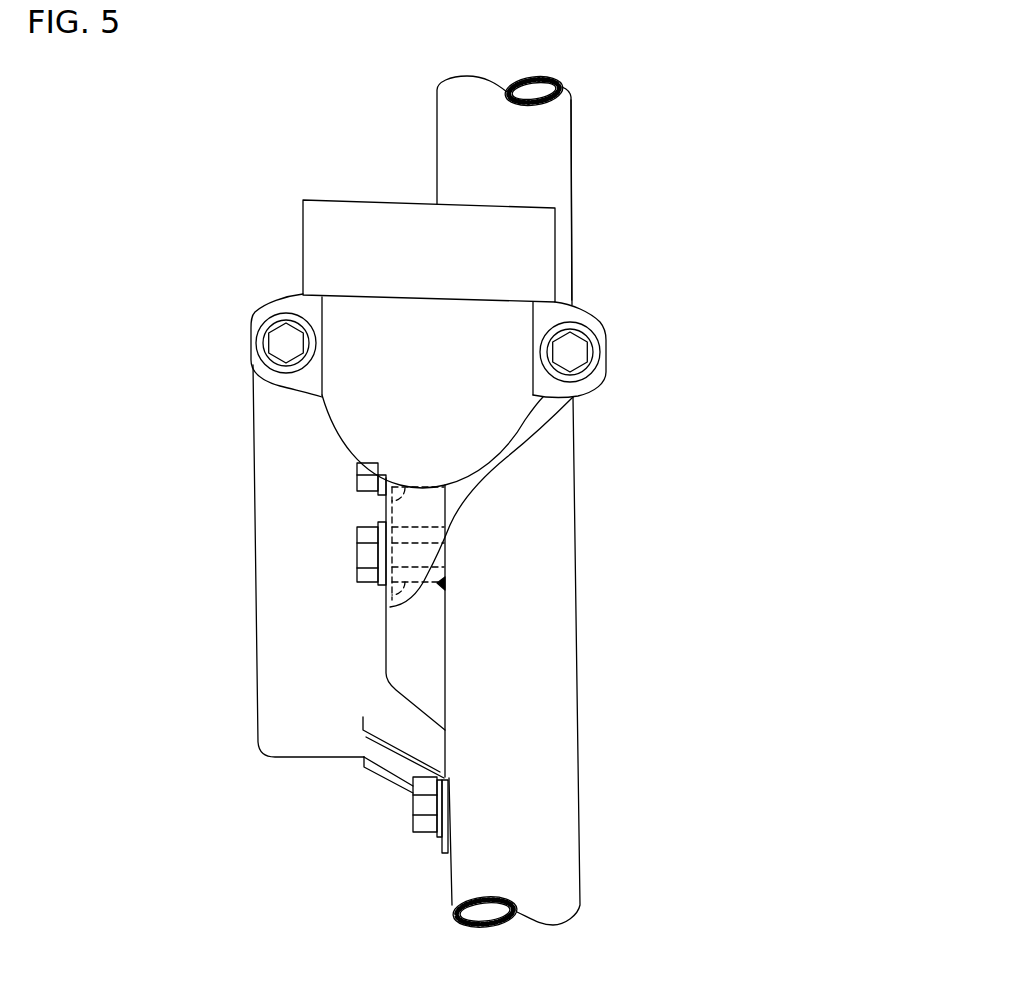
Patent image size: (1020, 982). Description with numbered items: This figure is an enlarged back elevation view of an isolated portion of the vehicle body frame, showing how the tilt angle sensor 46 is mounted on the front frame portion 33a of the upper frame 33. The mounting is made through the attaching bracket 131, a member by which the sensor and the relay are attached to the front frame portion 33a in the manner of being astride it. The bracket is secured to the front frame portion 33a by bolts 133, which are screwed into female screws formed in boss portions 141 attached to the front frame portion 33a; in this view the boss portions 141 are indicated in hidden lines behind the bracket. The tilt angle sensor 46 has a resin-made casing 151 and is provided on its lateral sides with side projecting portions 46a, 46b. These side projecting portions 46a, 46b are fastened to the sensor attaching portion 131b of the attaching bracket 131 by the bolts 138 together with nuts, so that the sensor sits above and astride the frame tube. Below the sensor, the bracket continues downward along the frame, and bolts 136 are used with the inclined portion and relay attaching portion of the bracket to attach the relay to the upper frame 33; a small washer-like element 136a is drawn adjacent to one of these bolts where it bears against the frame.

The upper frame 33 is at (573, 110).
The front frame portion 33a is at (547, 148).
The casing 151 is at (542, 228).
The tilt angle sensor 46 is at (337, 200).
The side projecting portion 46a is at (278, 305).
The side projecting portion 46b is at (587, 318).
The bolt 138 is at (273, 343).
The attaching bracket 131 is at (471, 511).
The sensor attaching portion 131b is at (542, 413).
The bolt 133 is at (355, 468).
The boss portion 141 is at (386, 508).
The bolt 136 is at (420, 803).
The washer plate 136a is at (437, 847).